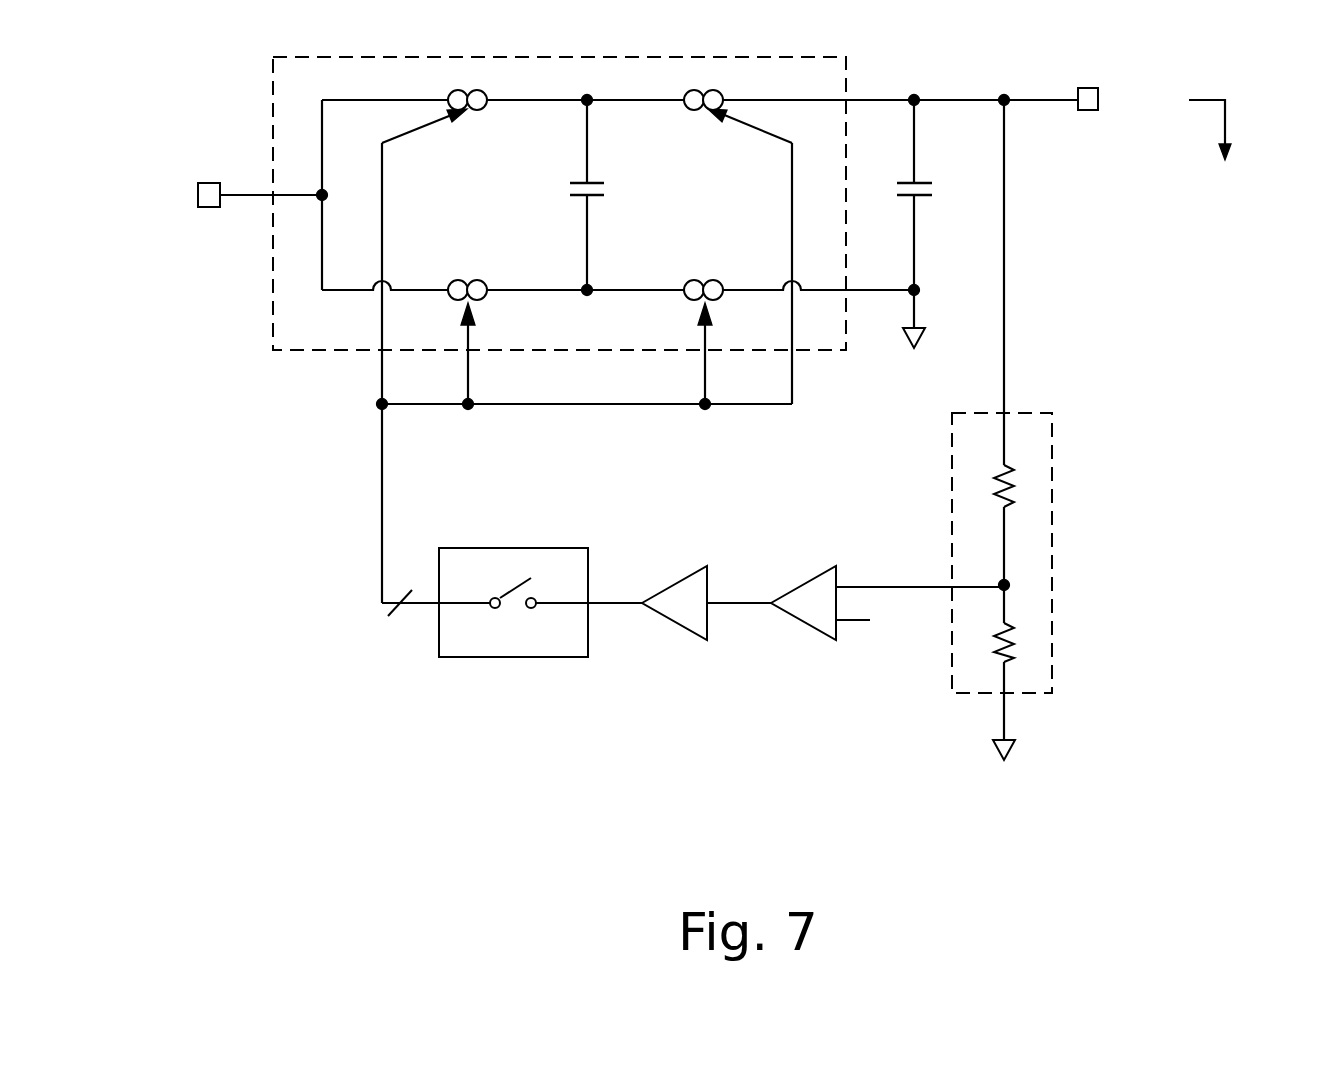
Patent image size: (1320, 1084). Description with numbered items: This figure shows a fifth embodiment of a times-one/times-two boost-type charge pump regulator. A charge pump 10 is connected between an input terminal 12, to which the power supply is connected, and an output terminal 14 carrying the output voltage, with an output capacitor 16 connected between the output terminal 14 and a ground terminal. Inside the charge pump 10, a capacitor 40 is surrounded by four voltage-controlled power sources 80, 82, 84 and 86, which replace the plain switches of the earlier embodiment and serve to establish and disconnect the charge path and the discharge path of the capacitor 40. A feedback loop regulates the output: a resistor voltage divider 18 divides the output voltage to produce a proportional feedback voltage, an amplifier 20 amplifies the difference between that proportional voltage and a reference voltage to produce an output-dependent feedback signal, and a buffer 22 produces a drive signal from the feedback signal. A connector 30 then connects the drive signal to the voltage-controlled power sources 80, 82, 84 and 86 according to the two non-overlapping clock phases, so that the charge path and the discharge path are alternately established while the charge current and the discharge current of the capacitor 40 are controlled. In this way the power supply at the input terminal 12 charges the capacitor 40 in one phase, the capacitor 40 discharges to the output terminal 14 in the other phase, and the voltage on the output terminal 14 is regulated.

The charge pump 10 is at (338, 353).
The input terminal 12 is at (318, 200).
The output terminal 14 is at (1087, 112).
The output capacitor 16 is at (925, 200).
The resistor voltage divider 18 is at (1052, 555).
The amplifier 20 is at (800, 576).
The buffer 22 is at (672, 576).
The connector 30 is at (512, 548).
The capacitor 40 is at (597, 200).
The voltage-controlled power source 80 is at (490, 113).
The voltage-controlled power source 82 is at (693, 115).
The voltage-controlled power source 84 is at (725, 276).
The voltage-controlled power source 86 is at (468, 272).